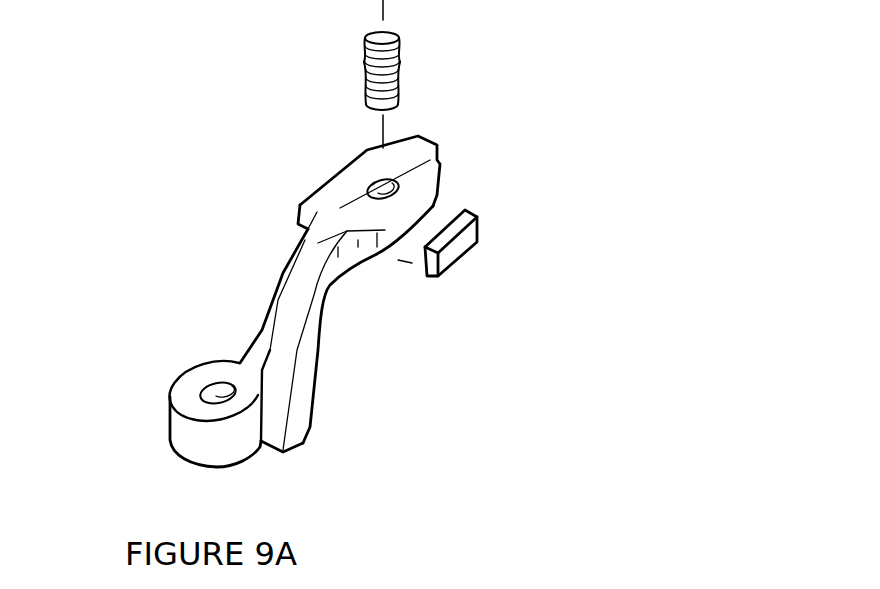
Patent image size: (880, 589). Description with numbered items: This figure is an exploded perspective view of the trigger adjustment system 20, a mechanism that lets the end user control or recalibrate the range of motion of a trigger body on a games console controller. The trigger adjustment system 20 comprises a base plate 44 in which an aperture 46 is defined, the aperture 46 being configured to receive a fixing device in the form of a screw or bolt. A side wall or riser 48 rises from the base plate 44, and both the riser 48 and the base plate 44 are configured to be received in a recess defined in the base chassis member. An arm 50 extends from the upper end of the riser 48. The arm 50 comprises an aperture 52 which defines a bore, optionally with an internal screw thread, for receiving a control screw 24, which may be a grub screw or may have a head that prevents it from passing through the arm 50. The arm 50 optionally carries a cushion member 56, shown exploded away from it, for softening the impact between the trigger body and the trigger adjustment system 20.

The trigger adjustment system 20 is at (198, 126).
The control screw 24 is at (385, 75).
The base plate 44 is at (192, 433).
The aperture 46 is at (223, 398).
The riser 48 is at (310, 350).
The arm 50 is at (430, 165).
The aperture 52 is at (380, 186).
The cushion member 56 is at (455, 247).